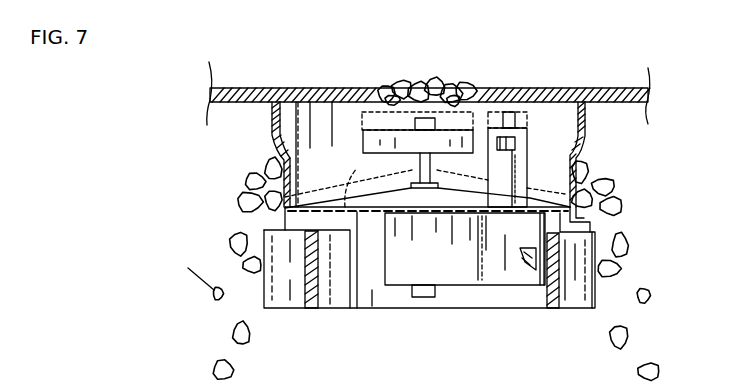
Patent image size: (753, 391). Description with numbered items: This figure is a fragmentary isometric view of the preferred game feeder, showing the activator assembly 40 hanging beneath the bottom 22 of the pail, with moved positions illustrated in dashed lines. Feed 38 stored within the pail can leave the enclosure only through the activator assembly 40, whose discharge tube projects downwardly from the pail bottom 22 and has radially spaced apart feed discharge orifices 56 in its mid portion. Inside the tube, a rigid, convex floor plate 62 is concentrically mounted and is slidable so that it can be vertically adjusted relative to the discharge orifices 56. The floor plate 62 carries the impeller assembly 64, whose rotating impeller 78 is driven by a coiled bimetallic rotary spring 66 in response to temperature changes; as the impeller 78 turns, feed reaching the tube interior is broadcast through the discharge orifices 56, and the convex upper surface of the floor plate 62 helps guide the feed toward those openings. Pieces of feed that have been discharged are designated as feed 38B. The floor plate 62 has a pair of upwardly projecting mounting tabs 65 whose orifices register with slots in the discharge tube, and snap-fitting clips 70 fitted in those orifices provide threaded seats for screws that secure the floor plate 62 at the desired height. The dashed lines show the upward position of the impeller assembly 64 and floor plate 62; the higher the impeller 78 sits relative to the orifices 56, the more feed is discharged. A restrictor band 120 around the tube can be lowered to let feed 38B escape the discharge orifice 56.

The bottom of the pail 22 is at (262, 87).
The feed 38 is at (423, 85).
The discharged feed 38B is at (230, 241).
The activator assembly 40 is at (604, 164).
The feed discharge orifices 56 is at (280, 156).
The convex floor plate 62 is at (429, 257).
The impeller assembly 64 is at (357, 123).
The mounting tabs 65 is at (515, 175).
The bimetallic rotary spring 66 is at (446, 296).
The snap-fitting clips 70 is at (517, 143).
The rotating impeller 78 is at (370, 164).
The restrictor band 120 is at (576, 290).